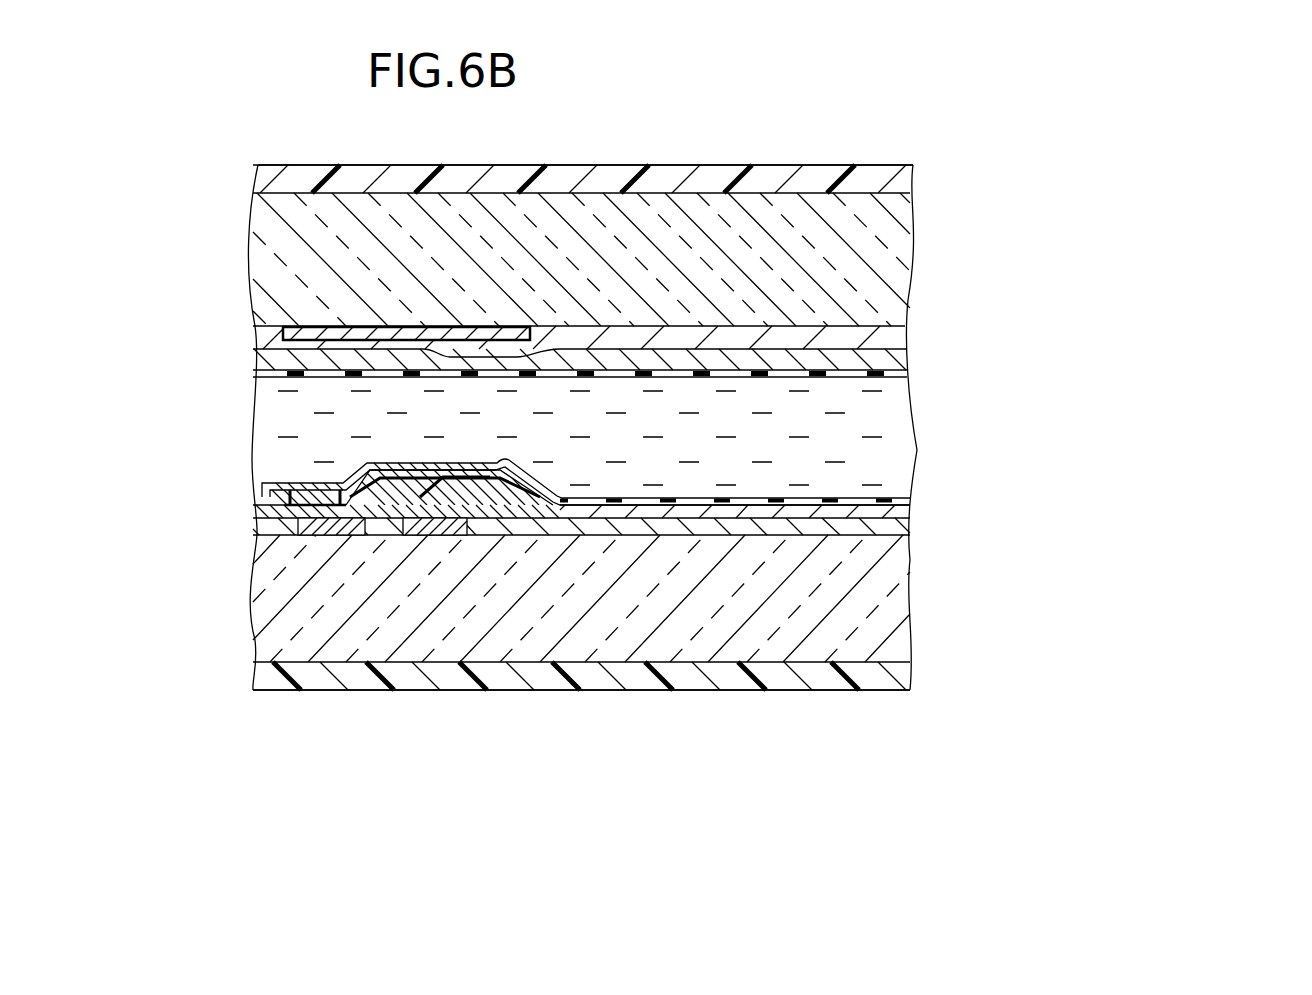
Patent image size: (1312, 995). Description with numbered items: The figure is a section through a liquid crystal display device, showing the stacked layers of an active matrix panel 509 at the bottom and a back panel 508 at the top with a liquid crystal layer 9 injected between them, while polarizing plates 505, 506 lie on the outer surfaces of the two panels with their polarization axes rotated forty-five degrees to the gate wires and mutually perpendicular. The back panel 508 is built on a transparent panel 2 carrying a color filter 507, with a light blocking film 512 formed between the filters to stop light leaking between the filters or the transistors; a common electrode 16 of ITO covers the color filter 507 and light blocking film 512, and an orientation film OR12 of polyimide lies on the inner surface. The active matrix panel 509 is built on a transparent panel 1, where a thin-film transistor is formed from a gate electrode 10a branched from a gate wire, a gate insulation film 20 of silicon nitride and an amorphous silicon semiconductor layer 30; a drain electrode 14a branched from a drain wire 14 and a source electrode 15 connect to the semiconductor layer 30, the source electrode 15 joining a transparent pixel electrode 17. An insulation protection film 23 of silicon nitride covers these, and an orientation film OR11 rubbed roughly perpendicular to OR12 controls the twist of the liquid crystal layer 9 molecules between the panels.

The polarizing plate 505 is at (905, 178).
The transparent panel 2 is at (903, 263).
The color filter 507 is at (903, 337).
The light blocking film 512 is at (290, 325).
The common electrode 16 is at (258, 361).
The orientation film OR12 is at (902, 372).
The liquid crystal layer 9 is at (262, 436).
The orientation film OR11 is at (903, 503).
The insulation protection film 23 is at (262, 508).
The semiconductor layer 30 is at (440, 505).
The source electrode 15 is at (510, 510).
The pixel electrode 17 is at (903, 517).
The gate insulation film 20 is at (265, 522).
The drain wire 14 is at (300, 540).
The gate electrode 10a is at (416, 515).
The drain electrode 14a is at (367, 500).
The transparent panel 1 is at (903, 607).
The polarizing plate 506 is at (910, 683).
The back panel 508 is at (737, 156).
The active matrix panel 509 is at (809, 712).